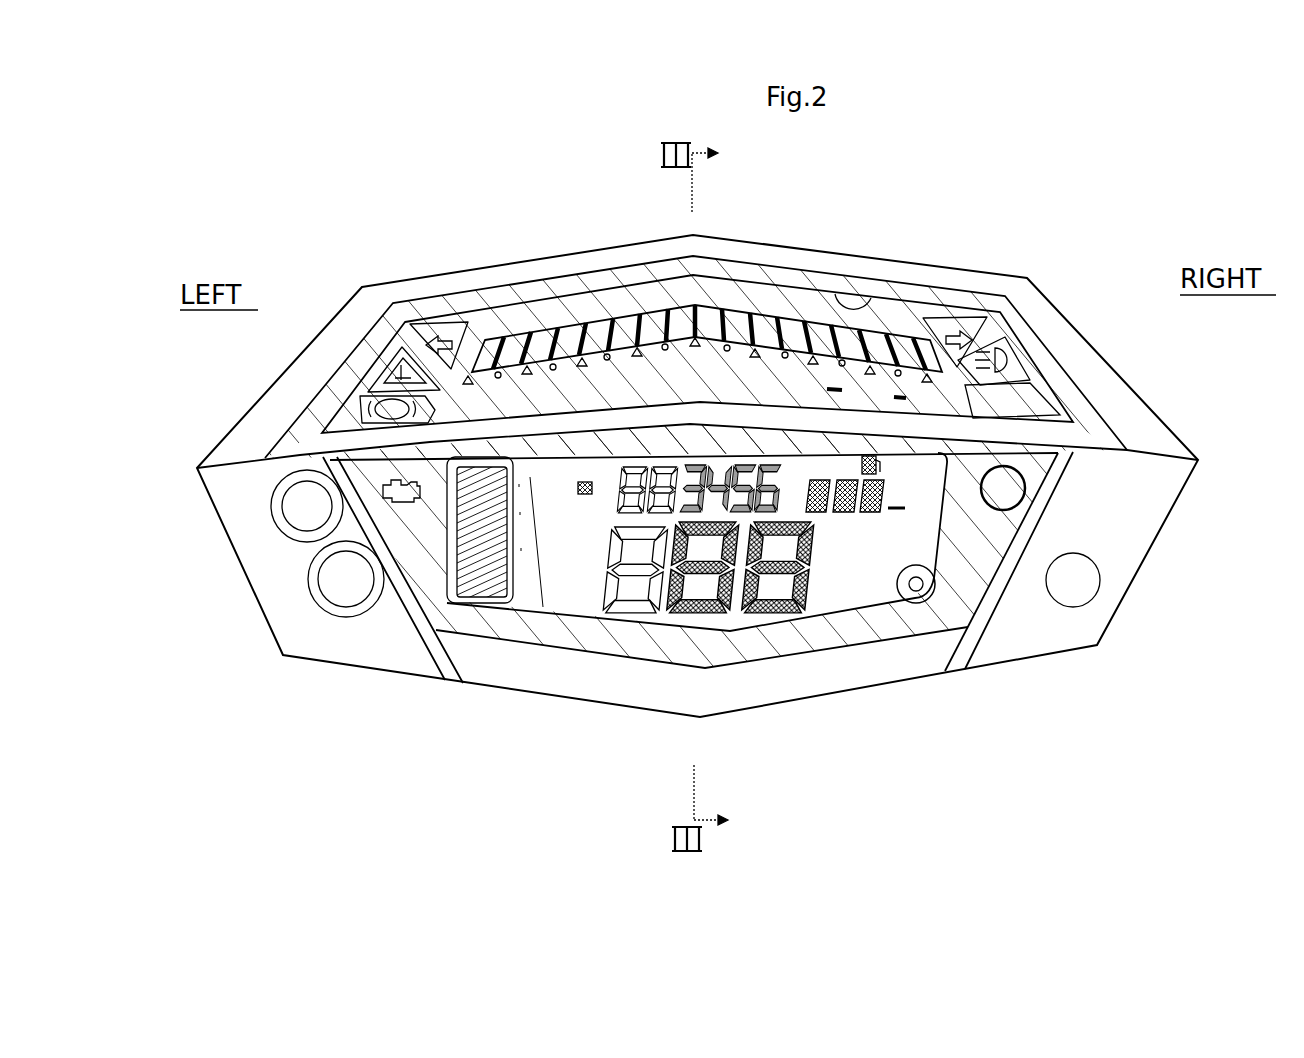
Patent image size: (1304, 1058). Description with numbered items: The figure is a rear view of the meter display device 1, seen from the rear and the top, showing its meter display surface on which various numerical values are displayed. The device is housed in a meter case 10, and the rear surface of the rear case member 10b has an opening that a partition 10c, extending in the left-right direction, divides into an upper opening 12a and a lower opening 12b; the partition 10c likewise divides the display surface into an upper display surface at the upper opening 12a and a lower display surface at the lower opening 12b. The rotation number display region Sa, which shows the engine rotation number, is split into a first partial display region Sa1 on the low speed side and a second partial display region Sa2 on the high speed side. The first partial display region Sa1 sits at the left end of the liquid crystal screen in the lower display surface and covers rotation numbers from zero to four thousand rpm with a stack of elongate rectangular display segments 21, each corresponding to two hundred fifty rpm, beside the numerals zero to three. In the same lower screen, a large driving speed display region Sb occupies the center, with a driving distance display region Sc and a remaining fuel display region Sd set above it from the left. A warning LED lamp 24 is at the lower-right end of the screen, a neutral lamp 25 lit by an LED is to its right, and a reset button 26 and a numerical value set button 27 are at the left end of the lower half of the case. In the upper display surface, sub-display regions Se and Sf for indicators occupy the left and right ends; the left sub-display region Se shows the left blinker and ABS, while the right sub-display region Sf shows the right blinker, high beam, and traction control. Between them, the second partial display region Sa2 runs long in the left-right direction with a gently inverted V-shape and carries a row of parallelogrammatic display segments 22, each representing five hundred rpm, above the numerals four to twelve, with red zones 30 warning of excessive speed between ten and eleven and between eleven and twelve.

The meter display device 1 is at (1052, 283).
The meter case 10 is at (687, 451).
The rear case member 10b is at (794, 262).
The partition 10c is at (1043, 442).
The upper opening 12a is at (899, 370).
The lower opening 12b is at (778, 655).
The display segments 21 is at (492, 600).
The display segments 22 is at (522, 355).
The warning LED lamp 24 is at (967, 633).
The neutral lamp 25 is at (1028, 497).
The reset button 26 is at (337, 588).
The numerical value set button 27 is at (307, 512).
The red zones 30 is at (868, 318).
The rotation number display region Sa is at (652, 466).
The first partial display region Sa1 is at (448, 568).
The second partial display region Sa2 is at (623, 299).
The driving speed display region Sb is at (712, 620).
The driving distance display region Sc is at (610, 507).
The remaining fuel display region Sd is at (890, 518).
The left sub-display region Se is at (363, 384).
The right sub-display region Sf is at (1030, 377).